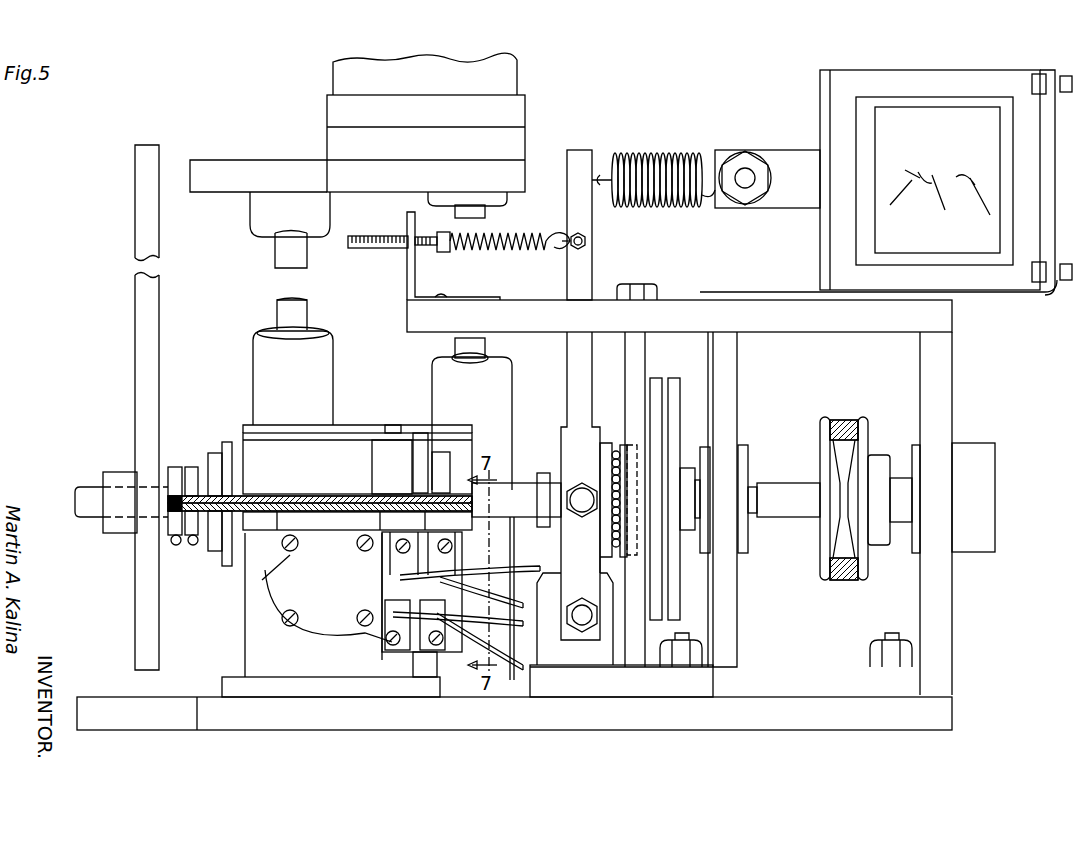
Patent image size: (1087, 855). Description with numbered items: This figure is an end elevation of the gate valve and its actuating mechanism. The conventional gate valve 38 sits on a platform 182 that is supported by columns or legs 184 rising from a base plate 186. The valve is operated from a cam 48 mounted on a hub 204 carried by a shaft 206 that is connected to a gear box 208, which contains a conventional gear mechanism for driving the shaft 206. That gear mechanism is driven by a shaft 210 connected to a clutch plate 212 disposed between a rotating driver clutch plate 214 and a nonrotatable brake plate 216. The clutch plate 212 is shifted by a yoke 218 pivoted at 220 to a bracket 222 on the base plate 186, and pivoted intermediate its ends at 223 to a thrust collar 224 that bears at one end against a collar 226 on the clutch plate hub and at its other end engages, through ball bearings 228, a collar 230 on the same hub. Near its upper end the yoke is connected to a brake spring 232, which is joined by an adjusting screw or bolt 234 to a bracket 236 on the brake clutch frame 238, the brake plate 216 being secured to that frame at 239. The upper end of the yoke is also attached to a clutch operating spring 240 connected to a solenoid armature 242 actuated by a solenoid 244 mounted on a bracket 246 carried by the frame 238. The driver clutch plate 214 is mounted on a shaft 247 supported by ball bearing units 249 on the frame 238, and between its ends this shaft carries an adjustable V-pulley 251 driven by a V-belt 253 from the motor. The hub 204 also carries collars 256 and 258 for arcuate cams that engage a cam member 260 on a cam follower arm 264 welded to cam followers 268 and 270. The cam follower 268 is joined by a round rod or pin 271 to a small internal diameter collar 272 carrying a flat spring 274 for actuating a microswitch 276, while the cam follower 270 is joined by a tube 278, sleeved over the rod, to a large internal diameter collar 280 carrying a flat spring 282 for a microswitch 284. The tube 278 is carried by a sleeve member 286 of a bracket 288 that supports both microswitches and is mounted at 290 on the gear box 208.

The gate valve 38 is at (434, 62).
The cam 48 is at (135, 205).
The platform 182 is at (226, 160).
The columns or legs 184 is at (255, 212).
The base plate 186 is at (130, 725).
The hub 204 is at (120, 472).
The shaft 206 is at (88, 487).
The gear box 208 is at (253, 447).
The shaft 210 is at (505, 483).
The clutch plate 212 is at (712, 372).
The rotating driver clutch plate 214 is at (712, 390).
The nonrotatable brake plate 216 is at (637, 342).
The yoke 218 is at (582, 405).
The pivot 220 is at (582, 625).
The bracket 222 is at (600, 655).
The pivot 223 is at (575, 490).
The thrust collar 224 is at (600, 427).
The collar 226 is at (555, 535).
The ball bearings 228 is at (614, 445).
The collar 230 is at (705, 378).
The brake spring 232 is at (492, 250).
The adjusting screw or bolt 234 is at (372, 236).
The bracket 236 is at (407, 268).
The brake clutch frame 238 is at (407, 310).
The securing point 239 is at (634, 284).
The clutch operating spring 240 is at (660, 153).
The solenoid armature 242 is at (760, 152).
The solenoid 244 is at (928, 113).
The bracket 246 is at (1050, 72).
The shaft 247 is at (790, 517).
The ball bearing units 249 is at (746, 450).
The adjustable V-pulley 251 is at (866, 572).
The V-belt 253 is at (843, 582).
The collar 256 is at (174, 467).
The collar 258 is at (193, 467).
The cam member 260 is at (212, 551).
The cam follower arm 264 is at (189, 544).
The cam follower 268 is at (171, 541).
The cam follower 270 is at (187, 545).
The round rod or pin 271 is at (266, 488).
The small internal diameter collar 272 is at (445, 468).
The flat spring 274 is at (422, 450).
The microswitch 276 is at (400, 600).
The tube 278 is at (318, 496).
The large internal diameter collar 280 is at (388, 494).
The flat spring 282 is at (393, 425).
The microswitch 284 is at (386, 580).
The sleeve member 286 is at (286, 494).
The bracket 288 is at (318, 565).
The mounting points 290 is at (357, 543).